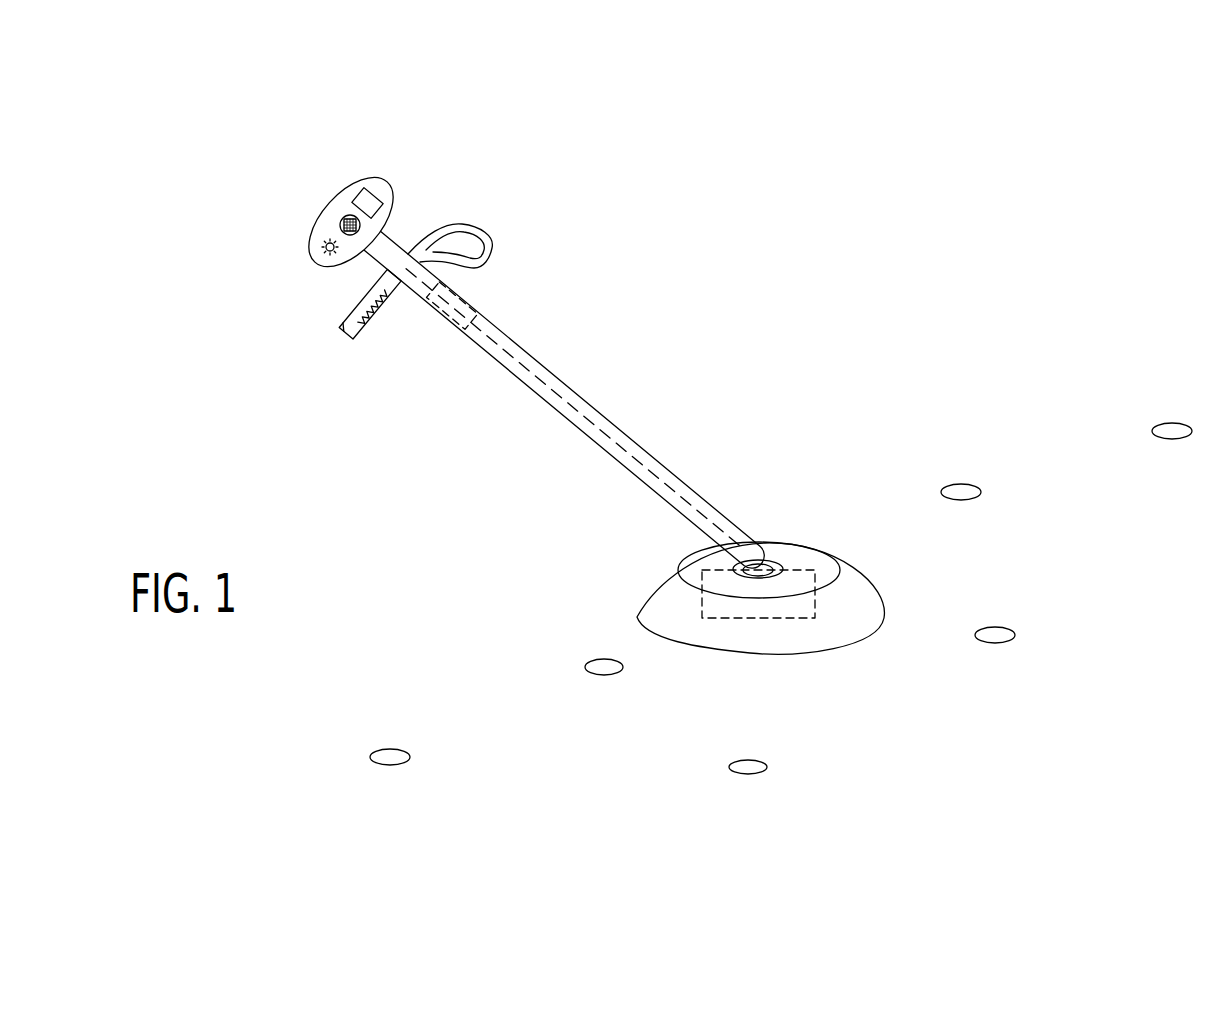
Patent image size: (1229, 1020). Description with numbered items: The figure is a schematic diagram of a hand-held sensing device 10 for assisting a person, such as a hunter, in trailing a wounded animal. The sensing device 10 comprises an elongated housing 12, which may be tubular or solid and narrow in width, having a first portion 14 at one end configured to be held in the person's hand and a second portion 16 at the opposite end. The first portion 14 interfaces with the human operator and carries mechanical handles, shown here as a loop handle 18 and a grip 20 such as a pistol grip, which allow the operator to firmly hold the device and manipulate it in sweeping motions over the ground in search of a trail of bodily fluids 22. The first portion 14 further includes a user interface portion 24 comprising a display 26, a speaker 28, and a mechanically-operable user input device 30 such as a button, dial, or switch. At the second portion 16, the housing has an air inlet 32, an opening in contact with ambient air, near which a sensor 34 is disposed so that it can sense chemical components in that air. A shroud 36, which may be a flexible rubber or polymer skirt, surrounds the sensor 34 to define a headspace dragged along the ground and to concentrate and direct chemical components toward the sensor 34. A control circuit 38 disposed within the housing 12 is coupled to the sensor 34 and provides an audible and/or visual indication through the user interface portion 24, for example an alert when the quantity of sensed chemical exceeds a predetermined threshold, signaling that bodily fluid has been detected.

The sensing device 10 is at (738, 180).
The elongated housing 12 is at (573, 388).
The first portion 14 is at (505, 215).
The second portion 16 is at (802, 522).
The loop handle 18 is at (492, 243).
The grip 20 is at (350, 338).
The bodily fluids 22 is at (1184, 406).
The user interface portion 24 is at (400, 178).
The display 26 is at (356, 192).
The speaker 28 is at (341, 219).
The mechanically-operable user input device 30 is at (326, 256).
The air inlet 32 is at (712, 684).
The sensor 34 is at (800, 582).
The shroud 36 is at (813, 636).
The control circuit 38 is at (437, 322).